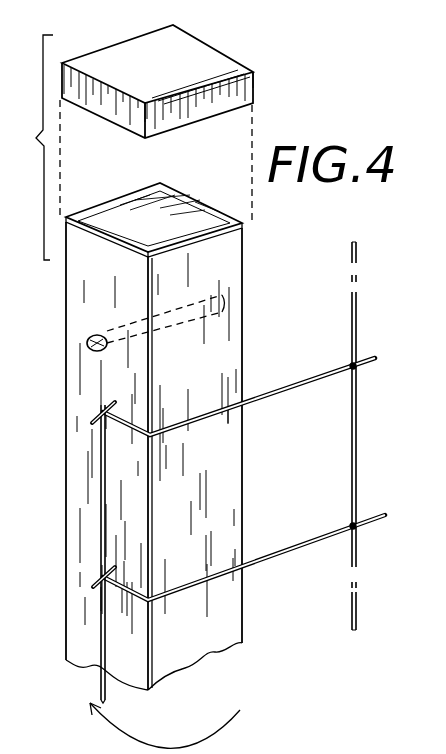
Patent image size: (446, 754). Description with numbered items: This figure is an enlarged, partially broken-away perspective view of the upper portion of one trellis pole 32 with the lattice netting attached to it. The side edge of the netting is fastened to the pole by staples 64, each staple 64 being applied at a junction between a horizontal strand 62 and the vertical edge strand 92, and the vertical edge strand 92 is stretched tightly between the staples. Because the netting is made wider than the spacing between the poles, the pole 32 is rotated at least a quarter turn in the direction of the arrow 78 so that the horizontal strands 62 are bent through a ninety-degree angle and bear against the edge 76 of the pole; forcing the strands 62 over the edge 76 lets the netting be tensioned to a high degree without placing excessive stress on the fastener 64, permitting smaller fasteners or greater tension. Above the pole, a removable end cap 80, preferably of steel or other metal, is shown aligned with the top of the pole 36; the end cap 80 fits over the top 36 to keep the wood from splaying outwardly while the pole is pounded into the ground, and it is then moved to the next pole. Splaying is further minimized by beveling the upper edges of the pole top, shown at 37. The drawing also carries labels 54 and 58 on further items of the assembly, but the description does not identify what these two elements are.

The pole 32 is at (82, 302).
The top of the pole 36 is at (203, 203).
The beveled upper edges 37 is at (222, 235).
The bolt 54 is at (87, 348).
The adjacent post 58 is at (358, 315).
The horizontal strands 62 is at (298, 390).
The staple 64 is at (93, 420).
The edge of the pole 76 is at (152, 505).
The arrow 78 is at (240, 717).
The removable end cap 80 is at (218, 57).
The vertical edge strand 92 is at (100, 505).